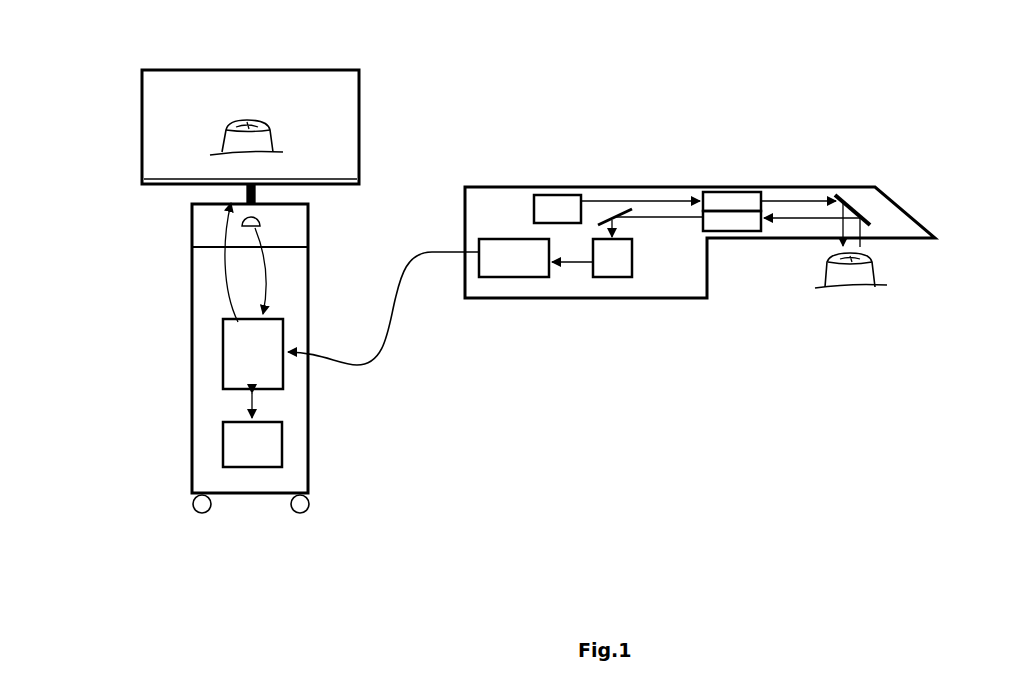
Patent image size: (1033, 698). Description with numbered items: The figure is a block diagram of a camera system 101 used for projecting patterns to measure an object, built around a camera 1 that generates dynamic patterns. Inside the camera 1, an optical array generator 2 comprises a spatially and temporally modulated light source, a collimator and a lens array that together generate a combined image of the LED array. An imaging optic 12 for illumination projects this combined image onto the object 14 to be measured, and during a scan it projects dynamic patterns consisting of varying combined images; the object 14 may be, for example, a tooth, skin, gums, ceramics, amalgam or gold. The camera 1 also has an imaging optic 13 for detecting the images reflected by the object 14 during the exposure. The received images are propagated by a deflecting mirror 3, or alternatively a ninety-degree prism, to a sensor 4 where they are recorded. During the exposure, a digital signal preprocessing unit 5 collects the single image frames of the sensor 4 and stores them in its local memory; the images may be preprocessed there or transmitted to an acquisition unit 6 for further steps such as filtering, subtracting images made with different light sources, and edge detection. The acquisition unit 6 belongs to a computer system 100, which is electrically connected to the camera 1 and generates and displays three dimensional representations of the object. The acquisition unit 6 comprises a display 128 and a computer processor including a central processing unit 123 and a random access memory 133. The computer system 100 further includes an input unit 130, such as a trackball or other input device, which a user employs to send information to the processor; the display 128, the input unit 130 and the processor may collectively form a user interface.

The computer system 100 is at (105, 130).
The camera system 101 is at (508, 97).
The display 128 is at (197, 70).
The acquisition unit 6 is at (192, 267).
The input unit 130 is at (257, 262).
The central processing unit (CPU) 123 is at (351, 335).
The random access memory (RAM) 133 is at (252, 444).
The camera 1 is at (627, 187).
The optical array generator 2 is at (617, 209).
The deflecting mirror 3 is at (650, 222).
The sensor 4 is at (592, 258).
The digital signal preprocessing unit 5 is at (514, 258).
The imaging optic for illumination 12 is at (732, 201).
The imaging optic for detection 13 is at (732, 221).
The object 14 is at (823, 272).